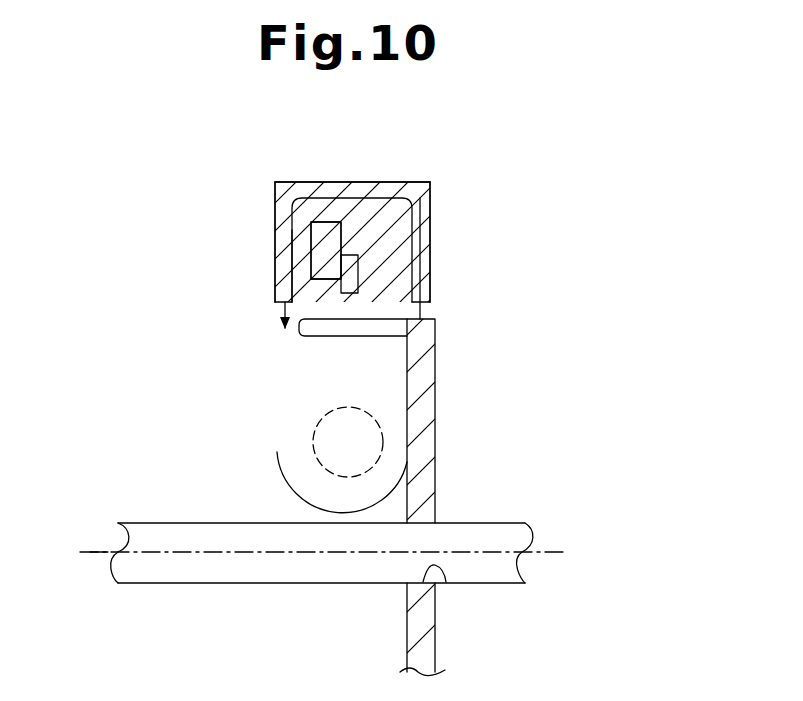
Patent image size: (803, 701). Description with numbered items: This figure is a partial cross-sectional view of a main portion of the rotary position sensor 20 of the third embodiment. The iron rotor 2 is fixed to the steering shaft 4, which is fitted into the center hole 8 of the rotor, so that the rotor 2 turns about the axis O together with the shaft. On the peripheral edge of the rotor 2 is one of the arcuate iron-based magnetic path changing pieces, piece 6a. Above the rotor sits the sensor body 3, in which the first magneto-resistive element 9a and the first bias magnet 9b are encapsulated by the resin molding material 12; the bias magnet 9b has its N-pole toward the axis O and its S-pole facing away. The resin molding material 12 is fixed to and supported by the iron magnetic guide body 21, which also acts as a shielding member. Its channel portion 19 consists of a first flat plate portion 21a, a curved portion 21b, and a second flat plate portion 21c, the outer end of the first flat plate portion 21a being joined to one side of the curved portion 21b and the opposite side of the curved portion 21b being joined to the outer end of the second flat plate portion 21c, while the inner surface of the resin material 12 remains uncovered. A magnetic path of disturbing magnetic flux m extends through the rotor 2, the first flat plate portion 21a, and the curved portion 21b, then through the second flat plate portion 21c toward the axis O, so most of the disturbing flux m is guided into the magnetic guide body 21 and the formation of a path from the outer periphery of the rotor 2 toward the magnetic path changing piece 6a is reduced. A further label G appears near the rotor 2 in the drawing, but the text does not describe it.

The rotor 2 is at (436, 419).
The sensor body 3 is at (301, 223).
The steering shaft 4 is at (493, 540).
The magnetic path changing piece 6a is at (307, 332).
The center hole 8 is at (446, 582).
The first magneto-resistive element 9a is at (349, 288).
The first bias magnet 9b is at (338, 222).
The resin molding material 12 is at (303, 268).
The channel portion 19 is at (430, 199).
The rotary position sensor 20 is at (586, 286).
The magnetic guide body 21 is at (436, 290).
The first flat plate portion 21a is at (428, 258).
The curved portion 21b is at (376, 183).
The second flat plate portion 21c is at (275, 285).
The center of gravity G is at (318, 428).
The disturbing magnetic flux m is at (292, 493).
The axis O is at (95, 548).